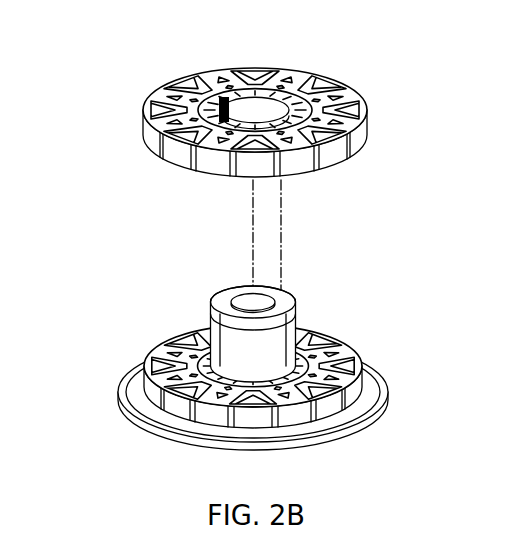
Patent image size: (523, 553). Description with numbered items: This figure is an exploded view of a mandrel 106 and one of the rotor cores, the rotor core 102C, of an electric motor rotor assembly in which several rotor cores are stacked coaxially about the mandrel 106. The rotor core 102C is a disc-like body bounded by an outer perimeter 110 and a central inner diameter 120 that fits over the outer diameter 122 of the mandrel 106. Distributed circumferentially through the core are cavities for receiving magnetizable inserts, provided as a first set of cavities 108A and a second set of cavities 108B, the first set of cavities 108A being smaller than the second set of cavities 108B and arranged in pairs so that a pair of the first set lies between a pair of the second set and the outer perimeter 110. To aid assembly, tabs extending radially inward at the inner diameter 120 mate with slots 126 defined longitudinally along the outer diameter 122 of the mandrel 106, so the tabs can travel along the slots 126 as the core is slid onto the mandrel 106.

The rotor core 102C is at (257, 109).
The mandrel 106 is at (385, 406).
The first set of cavities 108A is at (143, 115).
The second set of cavities 108B is at (254, 81).
The outer perimeter 110 is at (360, 377).
The inner diameter 120 is at (264, 110).
The outer diameter 122 is at (235, 338).
The slots 126 is at (290, 323).